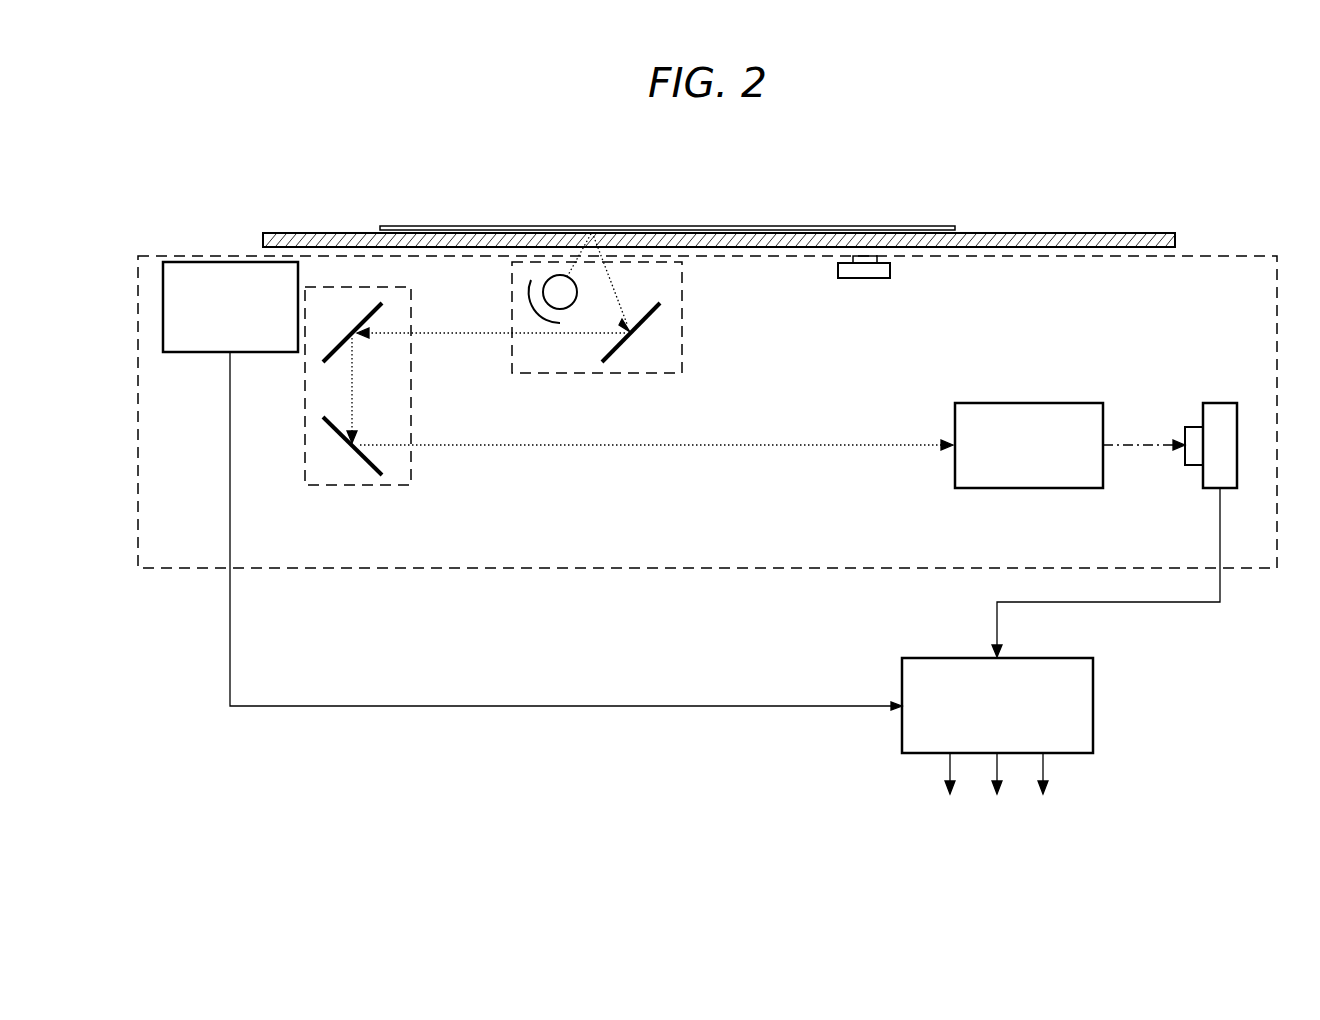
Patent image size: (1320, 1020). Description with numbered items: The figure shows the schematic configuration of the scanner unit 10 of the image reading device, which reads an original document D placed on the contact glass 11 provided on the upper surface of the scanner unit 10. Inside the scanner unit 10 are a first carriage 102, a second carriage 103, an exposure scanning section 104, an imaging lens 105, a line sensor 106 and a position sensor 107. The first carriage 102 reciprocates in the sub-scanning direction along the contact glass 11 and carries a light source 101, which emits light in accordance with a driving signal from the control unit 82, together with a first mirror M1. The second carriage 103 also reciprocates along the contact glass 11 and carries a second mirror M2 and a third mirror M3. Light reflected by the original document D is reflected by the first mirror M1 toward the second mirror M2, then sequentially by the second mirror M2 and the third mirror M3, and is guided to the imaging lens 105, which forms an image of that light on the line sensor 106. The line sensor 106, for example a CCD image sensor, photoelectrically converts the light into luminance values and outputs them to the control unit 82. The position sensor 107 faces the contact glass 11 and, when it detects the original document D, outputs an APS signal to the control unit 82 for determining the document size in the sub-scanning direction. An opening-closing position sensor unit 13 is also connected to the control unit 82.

The scanner unit 10 is at (783, 540).
The contact glass 11 is at (1050, 232).
The original document D is at (697, 226).
The position sensor 107 is at (866, 256).
The opening-closing position sensor unit 13 is at (236, 258).
The light source 101 is at (553, 276).
The first carriage 102 is at (683, 336).
The second carriage 103 is at (424, 472).
The exposure scanning section 104 is at (484, 399).
The imaging lens 105 is at (1028, 402).
The line sensor 106 is at (1222, 402).
The first mirror M1 is at (622, 354).
The second mirror M2 is at (380, 315).
The third mirror M3 is at (362, 468).
The control unit 82 is at (1095, 704).